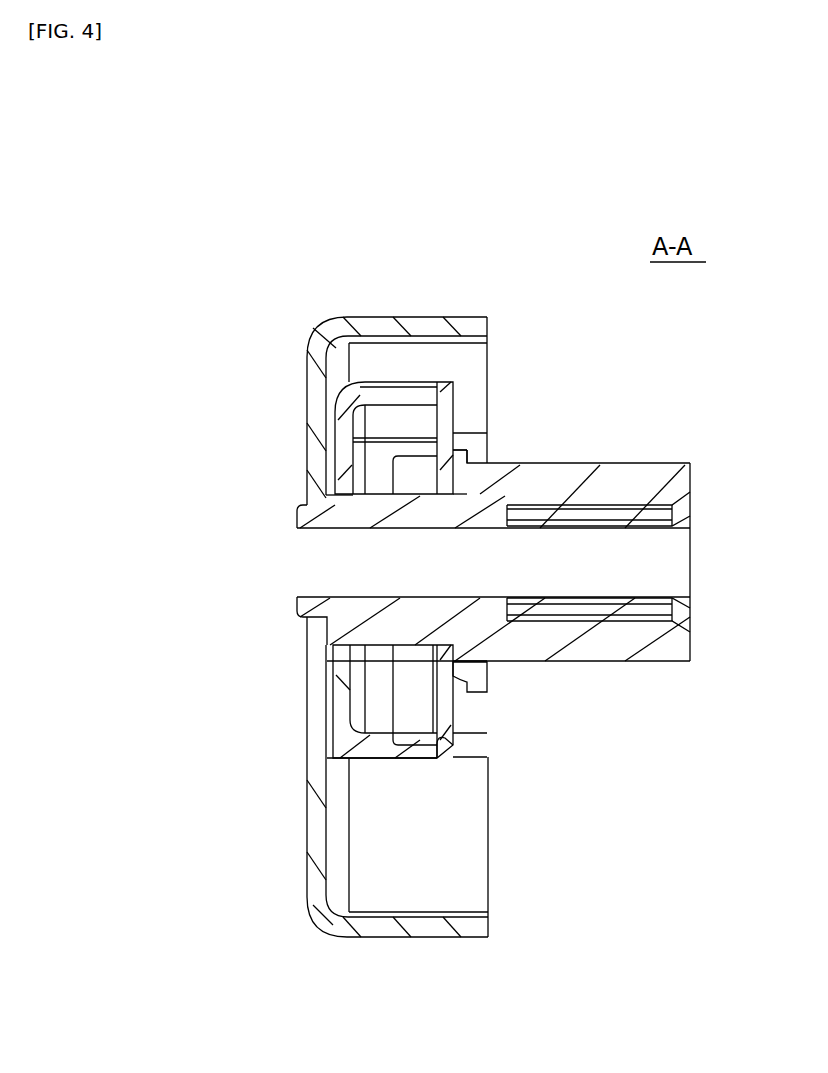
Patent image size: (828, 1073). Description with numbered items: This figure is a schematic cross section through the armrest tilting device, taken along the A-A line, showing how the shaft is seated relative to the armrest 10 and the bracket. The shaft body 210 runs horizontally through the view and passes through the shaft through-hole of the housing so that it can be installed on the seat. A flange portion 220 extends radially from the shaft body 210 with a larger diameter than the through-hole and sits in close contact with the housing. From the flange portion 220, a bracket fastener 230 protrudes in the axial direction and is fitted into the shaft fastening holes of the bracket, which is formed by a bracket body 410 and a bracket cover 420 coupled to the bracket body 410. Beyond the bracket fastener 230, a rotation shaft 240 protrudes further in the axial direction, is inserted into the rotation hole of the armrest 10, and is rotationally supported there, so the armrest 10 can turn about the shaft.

The armrest 10 is at (416, 317).
The shaft body 210 is at (600, 473).
The flange portion 220 is at (478, 455).
The bracket fastener 230 is at (387, 624).
The rotation shaft 240 is at (296, 518).
The bracket body 410 is at (393, 772).
The bracket cover 420 is at (443, 703).